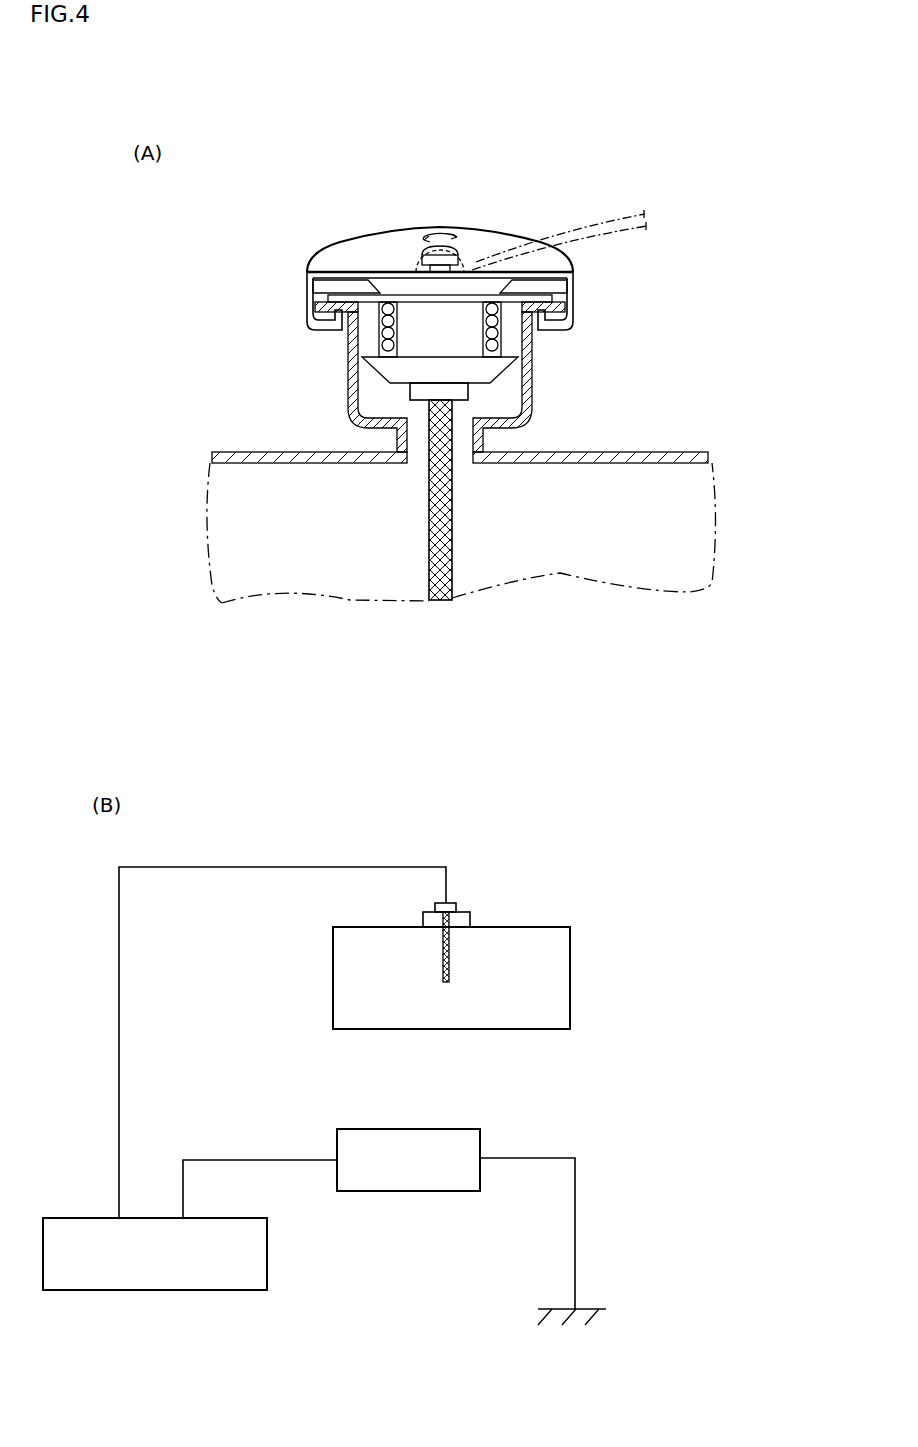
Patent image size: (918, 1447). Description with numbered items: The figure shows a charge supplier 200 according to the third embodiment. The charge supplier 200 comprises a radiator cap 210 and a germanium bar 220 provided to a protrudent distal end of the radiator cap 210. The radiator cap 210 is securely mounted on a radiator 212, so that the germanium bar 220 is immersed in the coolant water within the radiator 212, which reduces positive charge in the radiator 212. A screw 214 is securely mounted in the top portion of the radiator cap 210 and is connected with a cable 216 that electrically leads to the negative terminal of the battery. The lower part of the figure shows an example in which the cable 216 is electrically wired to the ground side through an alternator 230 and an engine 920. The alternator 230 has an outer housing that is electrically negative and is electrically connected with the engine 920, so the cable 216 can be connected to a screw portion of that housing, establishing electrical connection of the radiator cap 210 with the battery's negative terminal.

The charge supplier 200 is at (318, 187).
The radiator cap 210 is at (377, 243).
The radiator 212 is at (620, 498).
The screw 214 is at (440, 262).
The cable 216 is at (594, 223).
The germanium bar 220 is at (452, 531).
The alternator 230 is at (156, 1291).
The engine 920 is at (408, 1192).